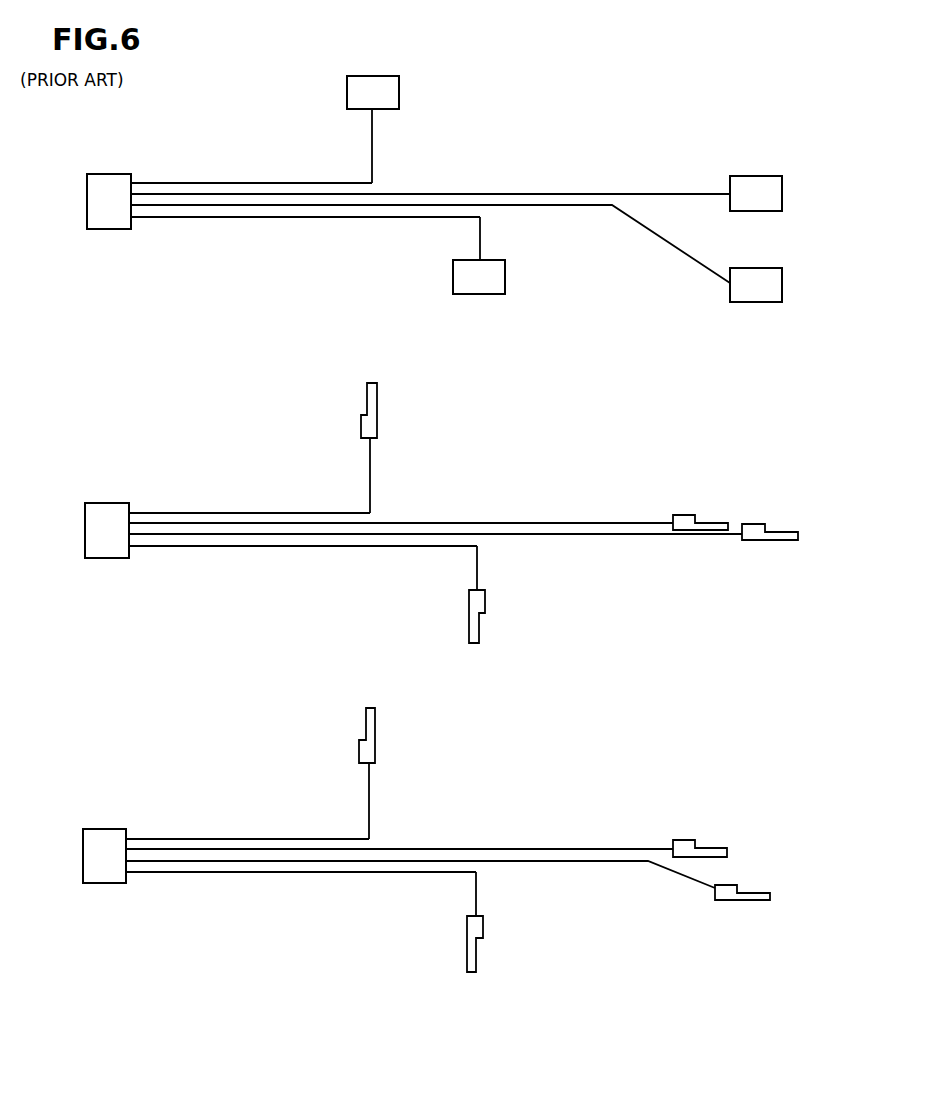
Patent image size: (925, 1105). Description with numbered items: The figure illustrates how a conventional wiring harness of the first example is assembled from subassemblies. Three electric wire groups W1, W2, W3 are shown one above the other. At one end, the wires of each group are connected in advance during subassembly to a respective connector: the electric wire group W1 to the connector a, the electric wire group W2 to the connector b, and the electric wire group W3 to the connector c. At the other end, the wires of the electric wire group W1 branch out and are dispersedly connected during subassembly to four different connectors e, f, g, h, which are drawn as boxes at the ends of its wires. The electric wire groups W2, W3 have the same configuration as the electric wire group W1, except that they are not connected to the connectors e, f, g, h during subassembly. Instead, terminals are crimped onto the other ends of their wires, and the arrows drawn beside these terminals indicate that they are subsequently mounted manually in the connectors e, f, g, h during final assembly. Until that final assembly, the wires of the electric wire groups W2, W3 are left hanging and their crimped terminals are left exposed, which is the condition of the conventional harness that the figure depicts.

The electric wire group W1 is at (193, 182).
The electric wire group W2 is at (190, 512).
The electric wire group W3 is at (190, 838).
The connector a is at (87, 200).
The connector b is at (85, 535).
The connector c is at (83, 868).
The connector e is at (399, 94).
The connector f is at (782, 190).
The connector g is at (782, 287).
The connector h is at (488, 294).